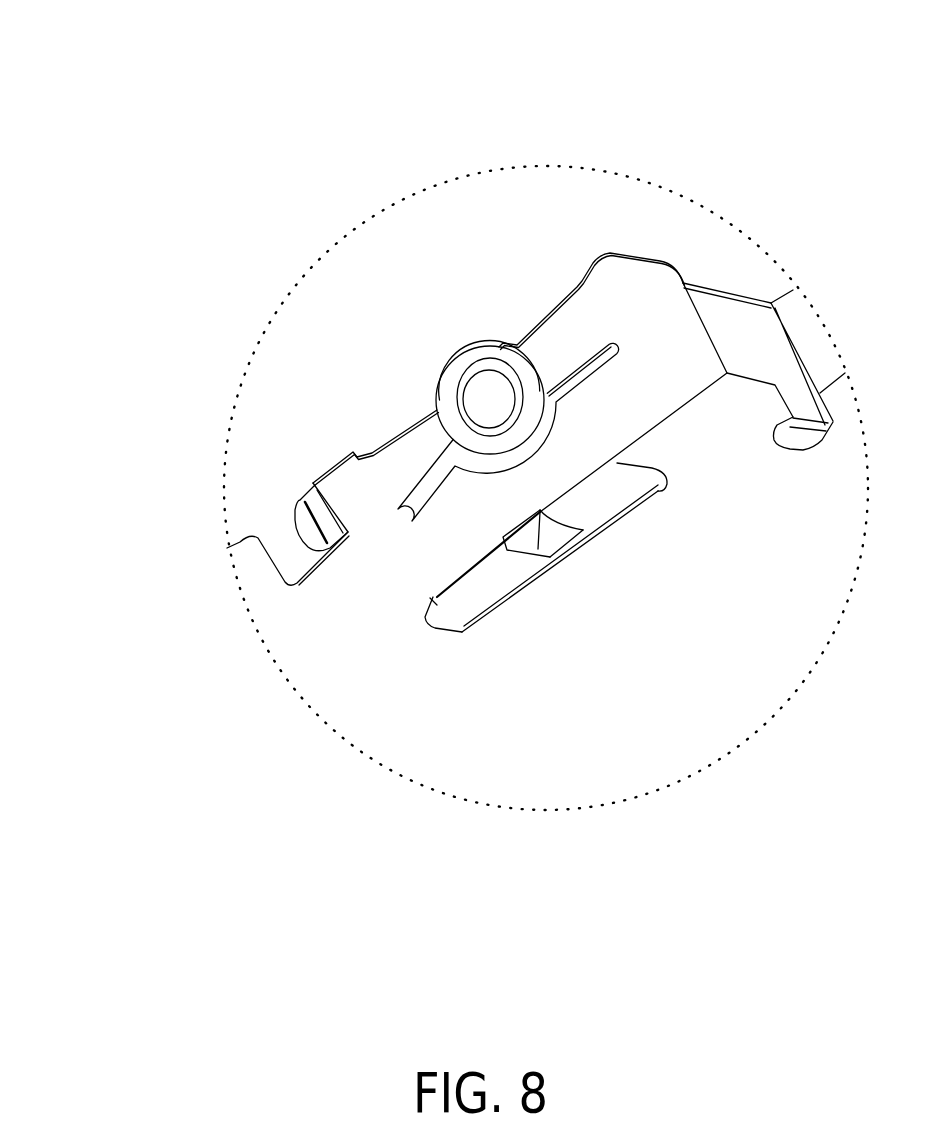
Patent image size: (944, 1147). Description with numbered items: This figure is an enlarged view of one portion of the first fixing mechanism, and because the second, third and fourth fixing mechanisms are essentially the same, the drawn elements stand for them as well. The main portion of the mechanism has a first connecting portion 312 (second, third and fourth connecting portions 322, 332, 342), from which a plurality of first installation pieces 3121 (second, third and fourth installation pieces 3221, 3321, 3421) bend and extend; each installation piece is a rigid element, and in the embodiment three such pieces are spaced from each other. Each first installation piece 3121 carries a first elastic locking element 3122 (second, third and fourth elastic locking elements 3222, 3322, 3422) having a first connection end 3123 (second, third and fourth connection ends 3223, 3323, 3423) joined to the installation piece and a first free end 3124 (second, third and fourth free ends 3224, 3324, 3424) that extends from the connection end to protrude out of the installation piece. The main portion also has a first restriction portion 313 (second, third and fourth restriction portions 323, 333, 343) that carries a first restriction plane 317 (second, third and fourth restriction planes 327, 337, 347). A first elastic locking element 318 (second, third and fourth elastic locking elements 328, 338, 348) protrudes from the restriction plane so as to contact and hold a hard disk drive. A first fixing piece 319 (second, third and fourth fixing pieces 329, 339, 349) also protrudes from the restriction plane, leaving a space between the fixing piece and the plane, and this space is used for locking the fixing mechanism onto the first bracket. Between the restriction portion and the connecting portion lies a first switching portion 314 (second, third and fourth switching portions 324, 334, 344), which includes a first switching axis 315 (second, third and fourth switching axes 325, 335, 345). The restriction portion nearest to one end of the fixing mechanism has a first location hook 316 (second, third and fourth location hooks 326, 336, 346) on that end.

The first connecting portion 312 is at (475, 718).
The second connecting portion 322 is at (475, 718).
The third connecting portion 332 is at (475, 718).
The fourth connecting portion 342 is at (470, 650).
The first restriction portion 313 is at (598, 266).
The second restriction portion 323 is at (598, 266).
The third restriction portion 333 is at (598, 266).
The fourth restriction portion 343 is at (820, 117).
The first switching portion 314 is at (242, 638).
The second switching portion 324 is at (242, 638).
The third switching portion 334 is at (242, 638).
The fourth switching portion 344 is at (303, 697).
The first switching axis 315 is at (289, 621).
The second switching axis 325 is at (289, 621).
The third switching axis 335 is at (289, 621).
The fourth switching axis 345 is at (433, 597).
The first location hook 316 is at (770, 300).
The second location hook 326 is at (770, 300).
The third location hook 336 is at (770, 300).
The fourth location hook 346 is at (803, 427).
The first restriction plane 317 is at (525, 317).
The second restriction plane 327 is at (525, 317).
The third restriction plane 337 is at (525, 317).
The fourth restriction plane 347 is at (623, 383).
The first elastic locking element 318 is at (465, 264).
The second elastic locking element 328 is at (465, 264).
The third elastic locking element 338 is at (465, 264).
The fourth elastic locking element 348 is at (485, 377).
The first fixing piece 319 is at (225, 375).
The second fixing piece 329 is at (225, 375).
The third fixing piece 339 is at (225, 375).
The fourth fixing piece 349 is at (325, 513).
The first installation piece 3121 is at (676, 651).
The second installation piece 3221 is at (676, 651).
The third installation piece 3321 is at (676, 651).
The fourth installation piece 3421 is at (652, 481).
The first elastic locking element 3122 is at (522, 741).
The second elastic locking element 3222 is at (522, 741).
The third elastic locking element 3322 is at (522, 741).
The fourth elastic locking element 3422 is at (715, 878).
The first connection end 3123 is at (601, 691).
The second connection end 3223 is at (601, 691).
The third connection end 3323 is at (601, 691).
The fourth connection end 3423 is at (578, 530).
The first free end 3124 is at (442, 708).
The second free end 3224 is at (442, 708).
The third free end 3324 is at (442, 708).
The fourth free end 3424 is at (537, 553).